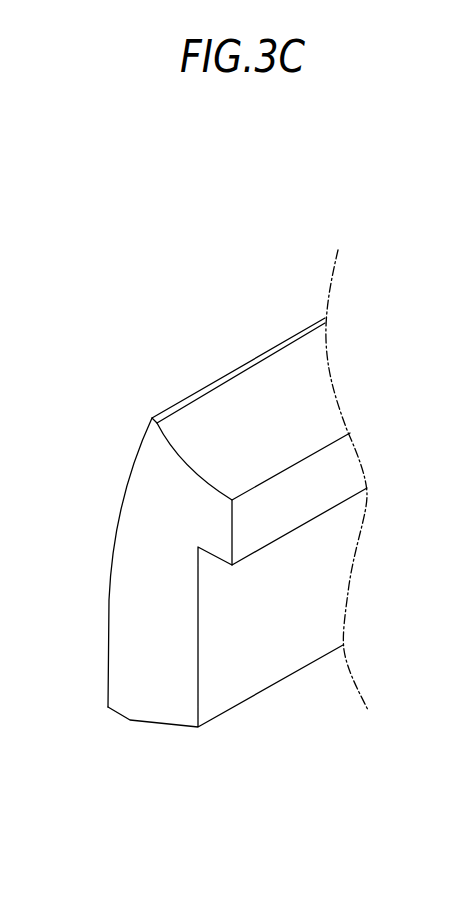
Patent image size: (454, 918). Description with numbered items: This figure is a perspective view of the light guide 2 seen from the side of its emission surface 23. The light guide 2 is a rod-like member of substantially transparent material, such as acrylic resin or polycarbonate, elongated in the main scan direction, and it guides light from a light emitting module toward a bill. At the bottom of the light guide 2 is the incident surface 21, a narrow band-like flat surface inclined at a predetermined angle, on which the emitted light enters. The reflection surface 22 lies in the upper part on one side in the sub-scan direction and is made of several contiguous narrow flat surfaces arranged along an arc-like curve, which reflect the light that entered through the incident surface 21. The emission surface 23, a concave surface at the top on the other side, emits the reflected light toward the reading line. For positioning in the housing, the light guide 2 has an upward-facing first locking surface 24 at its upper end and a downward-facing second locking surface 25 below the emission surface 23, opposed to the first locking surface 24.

The light guide 2 is at (164, 344).
The incident surface 21 is at (165, 727).
The reflection surface 22 is at (134, 413).
The emission surface 23 is at (295, 417).
The first locking surface 24 is at (256, 362).
The second locking surface 25 is at (293, 532).